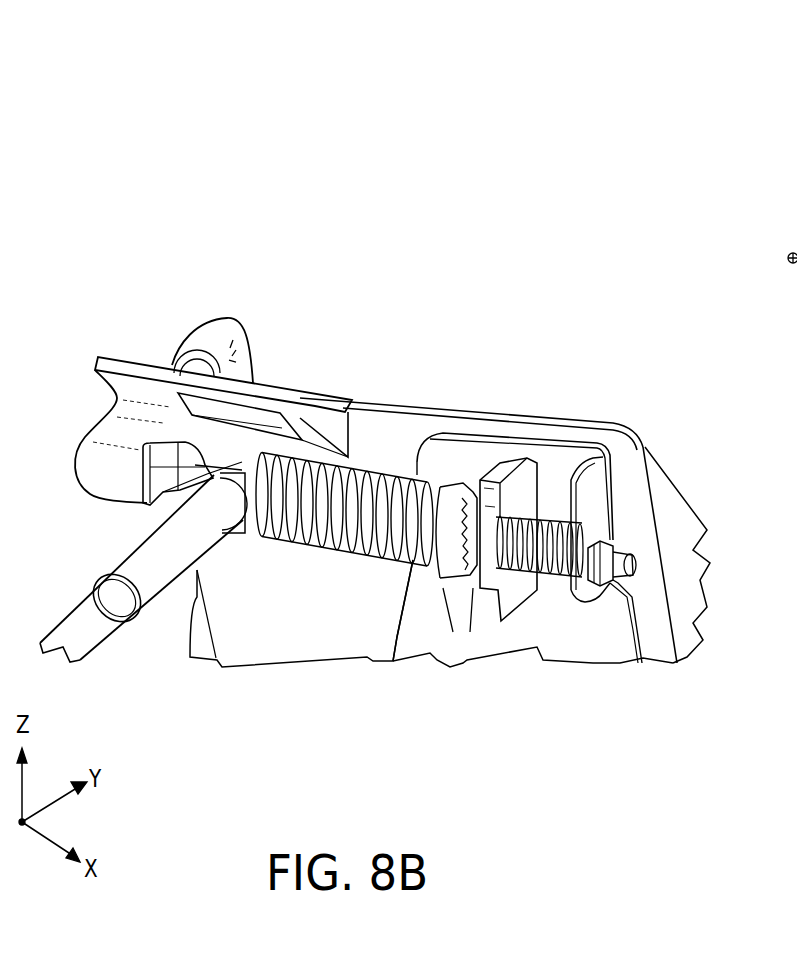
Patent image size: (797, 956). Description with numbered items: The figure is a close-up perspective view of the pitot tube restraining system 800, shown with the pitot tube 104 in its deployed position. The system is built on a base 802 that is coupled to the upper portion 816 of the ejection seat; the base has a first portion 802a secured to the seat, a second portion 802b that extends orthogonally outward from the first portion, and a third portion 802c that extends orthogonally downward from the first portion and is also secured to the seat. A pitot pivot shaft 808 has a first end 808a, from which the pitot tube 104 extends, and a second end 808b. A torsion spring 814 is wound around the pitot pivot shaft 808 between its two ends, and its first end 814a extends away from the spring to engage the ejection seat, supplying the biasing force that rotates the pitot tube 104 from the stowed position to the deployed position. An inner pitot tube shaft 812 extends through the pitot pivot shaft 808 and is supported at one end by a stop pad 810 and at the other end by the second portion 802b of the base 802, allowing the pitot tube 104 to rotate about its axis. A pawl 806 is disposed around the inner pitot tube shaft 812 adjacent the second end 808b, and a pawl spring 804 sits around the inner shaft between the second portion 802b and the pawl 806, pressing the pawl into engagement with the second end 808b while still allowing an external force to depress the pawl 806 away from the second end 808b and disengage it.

The pitot tube restraining system 800 is at (178, 215).
The pitot tube 104 is at (90, 633).
The base 802 is at (607, 475).
The first portion 802a is at (457, 442).
The second portion 802b is at (607, 527).
The third portion 802c is at (610, 625).
The pawl spring 804 is at (537, 565).
The pawl 806 is at (513, 463).
The pitot pivot shaft 808 is at (406, 437).
The first end 808a is at (143, 497).
The second end 808b is at (457, 572).
The stop pad 810 is at (258, 386).
The inner pitot tube shaft 812 is at (632, 563).
The torsion spring 814 is at (270, 517).
The first end 814a is at (443, 657).
The upper portion 816 is at (580, 423).